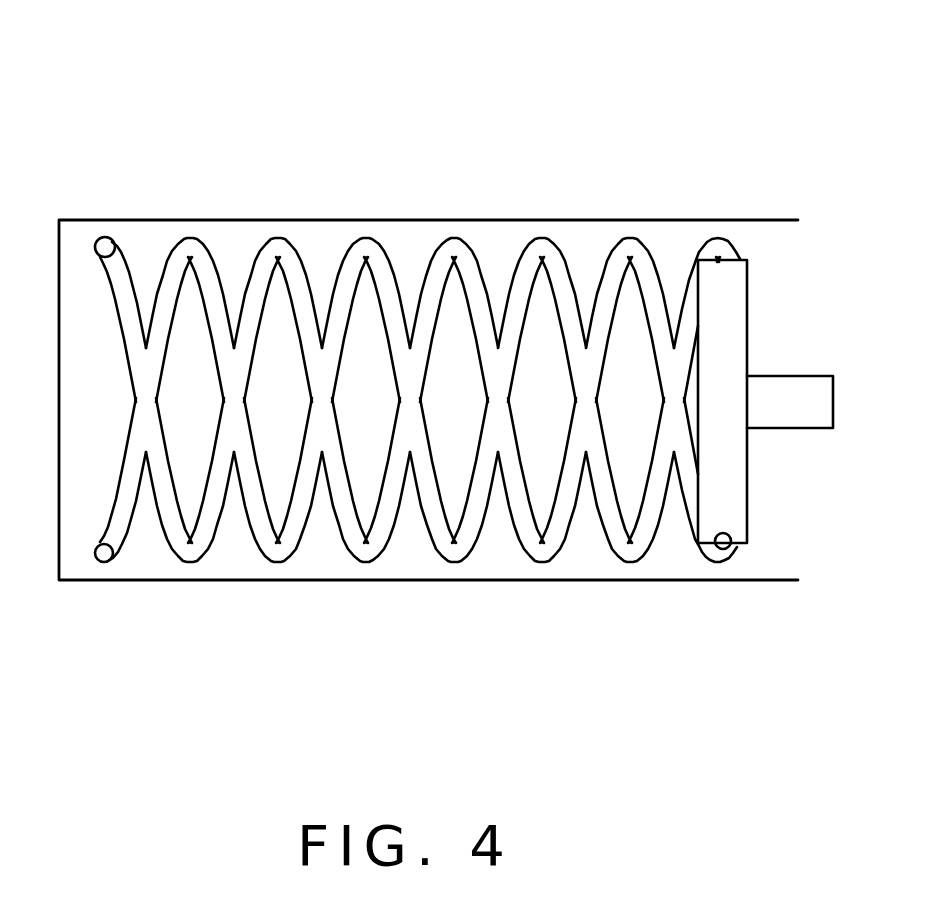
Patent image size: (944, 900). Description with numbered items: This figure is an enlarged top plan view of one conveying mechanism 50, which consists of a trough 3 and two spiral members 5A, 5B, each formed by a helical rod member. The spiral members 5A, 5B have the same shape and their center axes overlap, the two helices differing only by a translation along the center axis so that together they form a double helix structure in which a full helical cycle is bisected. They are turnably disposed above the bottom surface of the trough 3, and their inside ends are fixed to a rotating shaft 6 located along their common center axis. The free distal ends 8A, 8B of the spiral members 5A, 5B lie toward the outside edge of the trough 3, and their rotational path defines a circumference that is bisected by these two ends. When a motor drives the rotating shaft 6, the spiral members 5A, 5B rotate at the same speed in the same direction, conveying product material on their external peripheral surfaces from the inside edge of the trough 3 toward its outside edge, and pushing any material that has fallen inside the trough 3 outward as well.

The conveying mechanism 50 is at (102, 45).
The trough 3 is at (388, 581).
The spiral member 5A is at (195, 250).
The spiral member 5B is at (451, 243).
The rotating shaft 6 is at (722, 328).
The distal end 8A is at (107, 557).
The distal end 8B is at (108, 238).